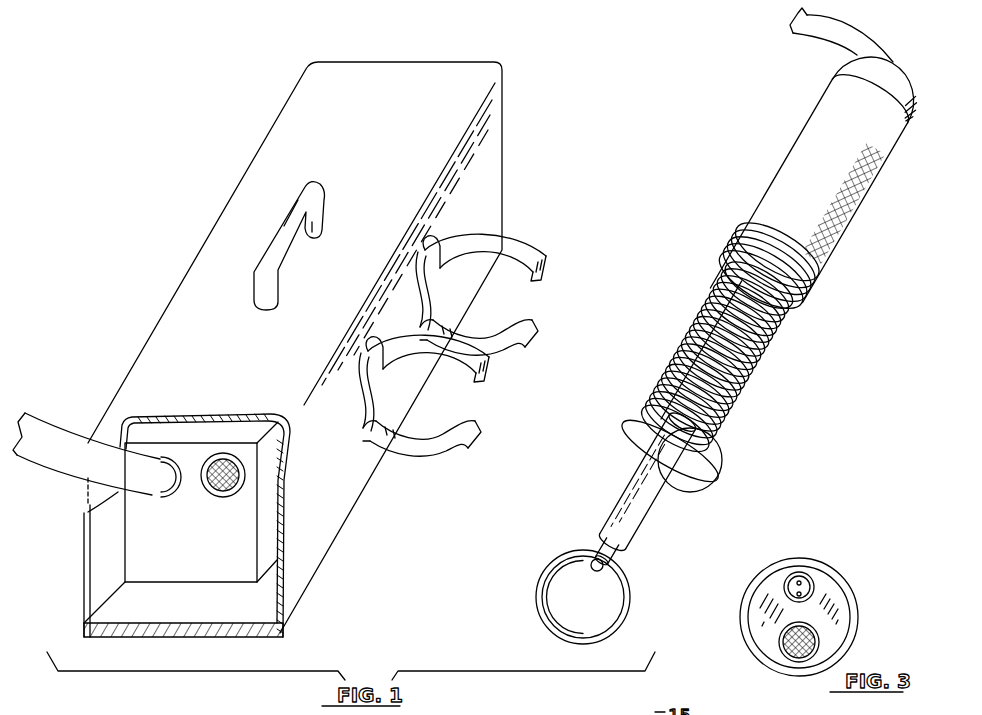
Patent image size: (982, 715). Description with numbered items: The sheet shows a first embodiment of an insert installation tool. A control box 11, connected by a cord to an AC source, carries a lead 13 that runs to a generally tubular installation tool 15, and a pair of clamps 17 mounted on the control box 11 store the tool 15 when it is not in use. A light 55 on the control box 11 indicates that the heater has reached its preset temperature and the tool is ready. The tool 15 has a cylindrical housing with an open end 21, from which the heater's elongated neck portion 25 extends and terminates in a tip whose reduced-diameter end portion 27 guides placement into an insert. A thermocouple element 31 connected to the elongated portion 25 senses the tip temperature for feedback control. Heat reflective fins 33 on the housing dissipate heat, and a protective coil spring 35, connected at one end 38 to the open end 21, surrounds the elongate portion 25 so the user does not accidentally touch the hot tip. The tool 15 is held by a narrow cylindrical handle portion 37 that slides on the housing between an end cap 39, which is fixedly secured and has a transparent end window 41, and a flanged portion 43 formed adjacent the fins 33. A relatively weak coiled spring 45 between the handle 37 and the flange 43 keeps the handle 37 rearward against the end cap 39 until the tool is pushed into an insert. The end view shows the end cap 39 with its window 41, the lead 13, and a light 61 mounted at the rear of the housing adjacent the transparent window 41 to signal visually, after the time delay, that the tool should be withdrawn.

In FIG. 1, the control box 11 is at (233, 167).
In FIG. 1, the lead 13 is at (60, 433).
In FIG. 3, the lead 13 is at (817, 23).
In FIG. 3, the installation tool 15 is at (756, 163).
In FIG. 1, the clamps 17 is at (510, 247).
In FIG. 3, the open end 21 is at (697, 447).
In FIG. 3, the elongated neck portion 25 is at (663, 492).
In FIG. 3, the end portion 27 is at (600, 565).
In FIG. 3, the thermocouple element 31 is at (604, 528).
In FIG. 3, the heat reflective fins 33 is at (764, 369).
In FIG. 3, the protective coil spring 35 is at (630, 583).
In FIG. 3, the handle portion 37 is at (857, 213).
In FIG. 3, the end of protective coil spring 38 is at (626, 447).
In FIG. 3, the end cap 39 is at (900, 72).
In FIG. 3, the transparent end window 41 is at (823, 583).
In FIG. 3, the flanged portion 43 is at (787, 318).
In FIG. 3, the coiled spring 45 is at (733, 247).
In FIG. 1, the light 55 is at (218, 494).
In FIG. 3, the light 61 is at (782, 643).